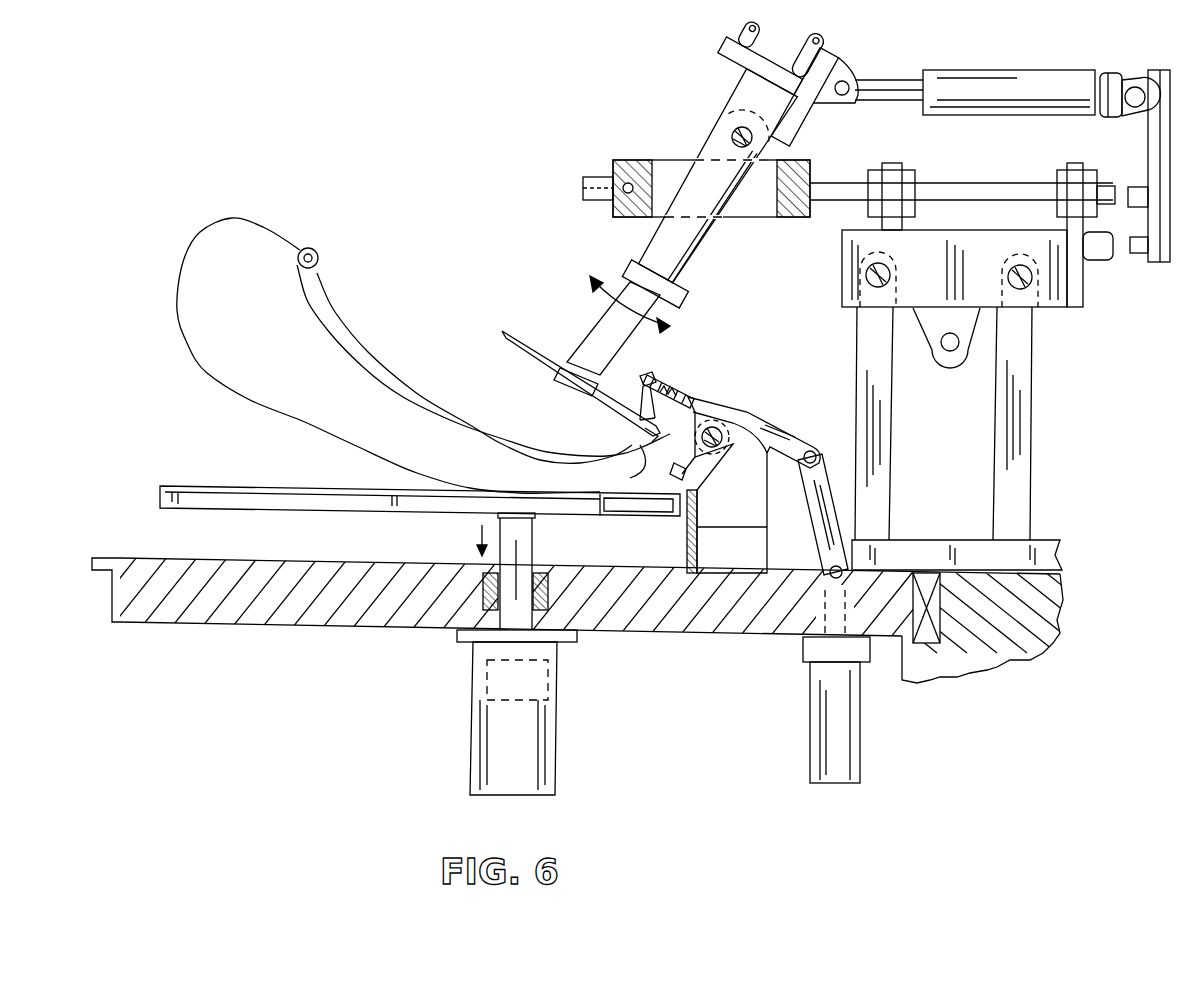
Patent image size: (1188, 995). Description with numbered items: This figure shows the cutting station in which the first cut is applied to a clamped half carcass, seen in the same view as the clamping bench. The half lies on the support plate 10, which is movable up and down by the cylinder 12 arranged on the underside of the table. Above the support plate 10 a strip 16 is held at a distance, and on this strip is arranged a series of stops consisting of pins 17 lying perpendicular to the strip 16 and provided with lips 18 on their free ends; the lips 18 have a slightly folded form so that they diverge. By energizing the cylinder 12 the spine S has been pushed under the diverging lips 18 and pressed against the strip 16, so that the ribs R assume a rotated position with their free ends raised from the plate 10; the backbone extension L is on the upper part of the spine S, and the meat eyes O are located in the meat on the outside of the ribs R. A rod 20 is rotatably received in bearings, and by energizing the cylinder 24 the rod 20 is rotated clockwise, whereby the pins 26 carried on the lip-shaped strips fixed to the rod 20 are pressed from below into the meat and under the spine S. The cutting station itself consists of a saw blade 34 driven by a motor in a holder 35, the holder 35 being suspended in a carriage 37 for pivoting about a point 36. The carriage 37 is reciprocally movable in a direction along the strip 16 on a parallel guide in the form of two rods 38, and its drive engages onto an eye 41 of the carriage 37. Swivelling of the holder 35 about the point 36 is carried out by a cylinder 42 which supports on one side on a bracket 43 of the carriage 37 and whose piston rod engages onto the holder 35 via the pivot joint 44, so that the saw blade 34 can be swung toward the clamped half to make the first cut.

The support plate 10 is at (213, 487).
The cylinder 12 is at (553, 717).
The strip 16 is at (658, 377).
The pins 17 is at (637, 390).
The lips 18 is at (637, 417).
The rod 20 is at (722, 443).
The cylinder 24 is at (817, 717).
The pin 26 is at (673, 465).
The saw blade 34 is at (540, 350).
The holder 35 is at (700, 250).
The point 36 is at (735, 130).
The carriage 37 is at (797, 218).
The rods 38 is at (1010, 267).
The eye 41 is at (950, 351).
The cylinder 42 is at (1007, 116).
The bracket 43 is at (1150, 153).
The pivot joint 44 is at (842, 95).
The ribs R is at (423, 410).
The meat eyes O is at (632, 445).
The spine S is at (677, 390).
The backbone extension L is at (712, 405).